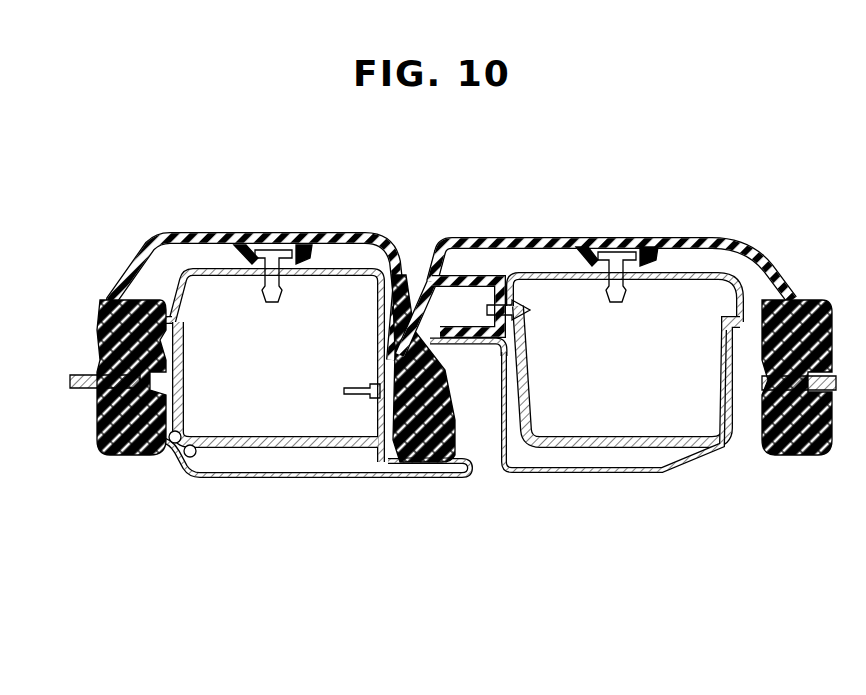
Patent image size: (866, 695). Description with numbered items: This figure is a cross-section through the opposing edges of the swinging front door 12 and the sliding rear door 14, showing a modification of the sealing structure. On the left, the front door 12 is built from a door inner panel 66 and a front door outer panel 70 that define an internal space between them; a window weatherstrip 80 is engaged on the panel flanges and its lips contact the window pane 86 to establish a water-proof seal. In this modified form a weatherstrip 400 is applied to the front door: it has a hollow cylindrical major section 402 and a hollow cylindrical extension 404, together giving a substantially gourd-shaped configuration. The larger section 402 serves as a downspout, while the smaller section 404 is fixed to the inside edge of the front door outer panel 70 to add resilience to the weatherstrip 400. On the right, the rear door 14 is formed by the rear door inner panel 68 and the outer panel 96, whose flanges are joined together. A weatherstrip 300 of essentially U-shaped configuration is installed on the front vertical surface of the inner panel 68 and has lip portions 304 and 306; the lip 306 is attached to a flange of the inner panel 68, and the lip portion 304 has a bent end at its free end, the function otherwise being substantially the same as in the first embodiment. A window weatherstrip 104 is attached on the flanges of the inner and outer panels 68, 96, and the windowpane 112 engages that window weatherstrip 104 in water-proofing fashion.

The swinging front door 12 is at (262, 373).
The sliding rear door 14 is at (648, 378).
The door inner panel 66 is at (337, 272).
The door inner panel 68 is at (695, 276).
The front door outer panel 70 is at (308, 478).
The window weatherstrip 80 is at (97, 443).
The window pane 86 is at (93, 377).
The outer panel 96 is at (570, 473).
The window weatherstrip 104 is at (823, 413).
The windowpane 112 is at (817, 384).
The weatherstrip 300 is at (470, 290).
The lip portion 304 is at (510, 346).
The lip portion 306 is at (423, 282).
The weatherstrip 400 is at (433, 380).
The hollow cylindrical major section 402 is at (378, 346).
The hollow cylindrical extension 404 is at (423, 465).